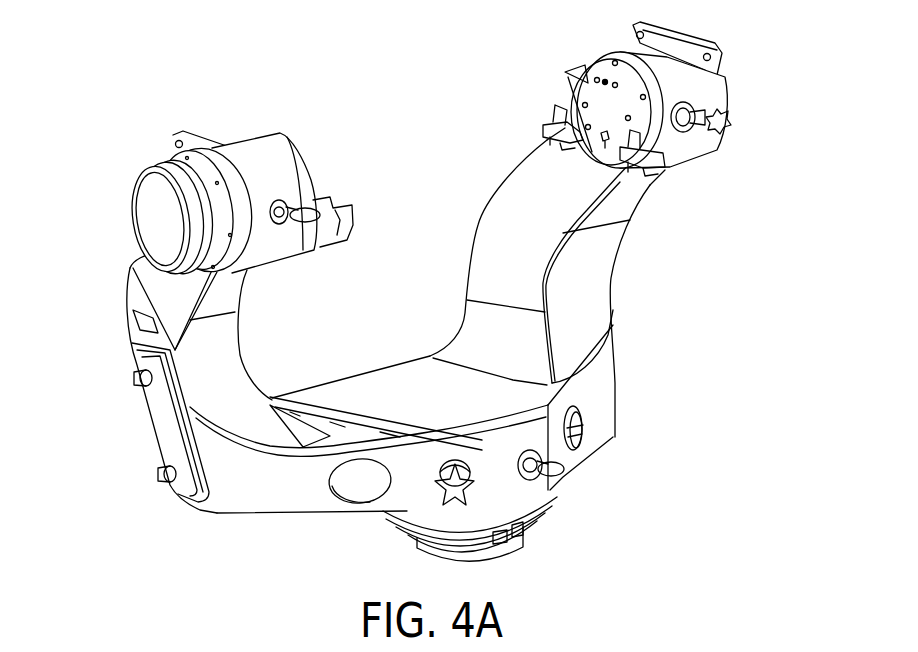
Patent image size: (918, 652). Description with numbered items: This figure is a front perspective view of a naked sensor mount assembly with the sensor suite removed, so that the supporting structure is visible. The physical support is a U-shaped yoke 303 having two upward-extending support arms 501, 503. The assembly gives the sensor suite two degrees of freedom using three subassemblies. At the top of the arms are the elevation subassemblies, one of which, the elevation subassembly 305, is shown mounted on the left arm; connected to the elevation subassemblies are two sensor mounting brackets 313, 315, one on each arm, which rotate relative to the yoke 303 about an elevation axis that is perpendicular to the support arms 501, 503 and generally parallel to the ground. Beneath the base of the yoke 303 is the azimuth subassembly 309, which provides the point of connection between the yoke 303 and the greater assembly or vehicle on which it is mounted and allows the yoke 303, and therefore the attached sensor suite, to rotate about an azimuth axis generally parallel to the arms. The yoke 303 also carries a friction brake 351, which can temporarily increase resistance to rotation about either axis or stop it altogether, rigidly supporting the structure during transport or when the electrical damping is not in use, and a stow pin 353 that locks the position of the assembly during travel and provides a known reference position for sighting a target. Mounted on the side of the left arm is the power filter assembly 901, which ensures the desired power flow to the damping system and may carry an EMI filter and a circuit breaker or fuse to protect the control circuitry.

The yoke 303 is at (615, 300).
The elevation subassembly 305 is at (121, 212).
The azimuth subassembly 309 is at (515, 559).
The sensor mounting bracket 313 is at (323, 190).
The sensor mounting bracket 315 is at (578, 103).
The friction brake 351 is at (442, 490).
The stow pin 353 is at (283, 228).
The support arm 501 is at (127, 297).
The support arm 503 is at (640, 197).
The power filter assembly 901 is at (163, 427).